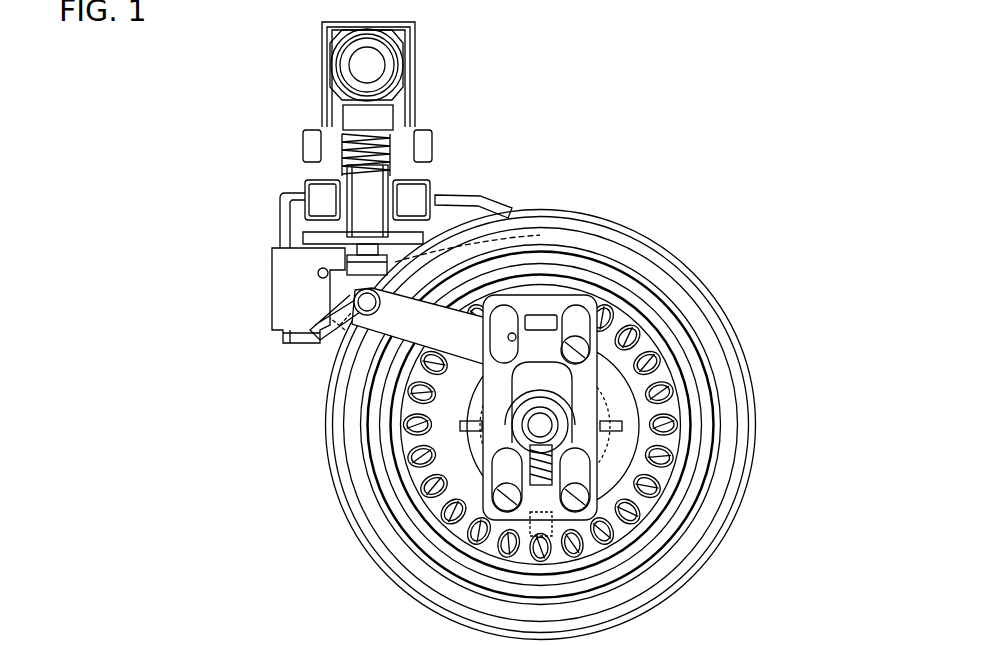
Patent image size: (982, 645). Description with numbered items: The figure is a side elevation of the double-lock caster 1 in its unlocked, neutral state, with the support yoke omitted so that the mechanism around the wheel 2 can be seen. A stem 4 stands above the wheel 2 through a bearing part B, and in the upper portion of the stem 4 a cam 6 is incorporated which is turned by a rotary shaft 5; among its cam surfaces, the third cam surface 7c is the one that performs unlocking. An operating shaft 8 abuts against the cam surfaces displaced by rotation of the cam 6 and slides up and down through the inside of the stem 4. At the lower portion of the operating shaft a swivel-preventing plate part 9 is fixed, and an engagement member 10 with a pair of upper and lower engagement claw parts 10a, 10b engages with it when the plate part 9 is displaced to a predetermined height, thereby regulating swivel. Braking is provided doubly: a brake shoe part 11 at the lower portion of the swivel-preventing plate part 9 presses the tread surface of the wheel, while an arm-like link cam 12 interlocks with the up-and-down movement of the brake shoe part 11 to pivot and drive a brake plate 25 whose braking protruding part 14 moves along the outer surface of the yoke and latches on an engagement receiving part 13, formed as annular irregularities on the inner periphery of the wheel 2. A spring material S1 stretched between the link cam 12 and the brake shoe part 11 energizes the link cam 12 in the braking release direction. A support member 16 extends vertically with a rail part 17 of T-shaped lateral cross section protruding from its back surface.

The double-lock caster 1 is at (632, 146).
The wheel 2 is at (700, 252).
The stem 4 is at (413, 105).
The rotary shaft 5 is at (400, 60).
The cam 6 is at (331, 60).
The third cam surface 7c is at (385, 68).
The operating shaft 8 is at (310, 160).
The swivel-preventing plate part 9 is at (470, 200).
The engagement member 10 is at (196, 195).
The upper engagement claw part 10a is at (290, 215).
The lower engagement claw part 10b is at (300, 262).
The brake shoe part 11 is at (510, 255).
The link cam 12 is at (395, 345).
The engagement receiving part 13 is at (600, 490).
The braking protruding part 14 is at (545, 545).
The support member 16 is at (300, 345).
The rail part 17 is at (272, 300).
The brake plate 25 is at (640, 415).
The bearing part B is at (420, 178).
The spring material S1 is at (345, 330).